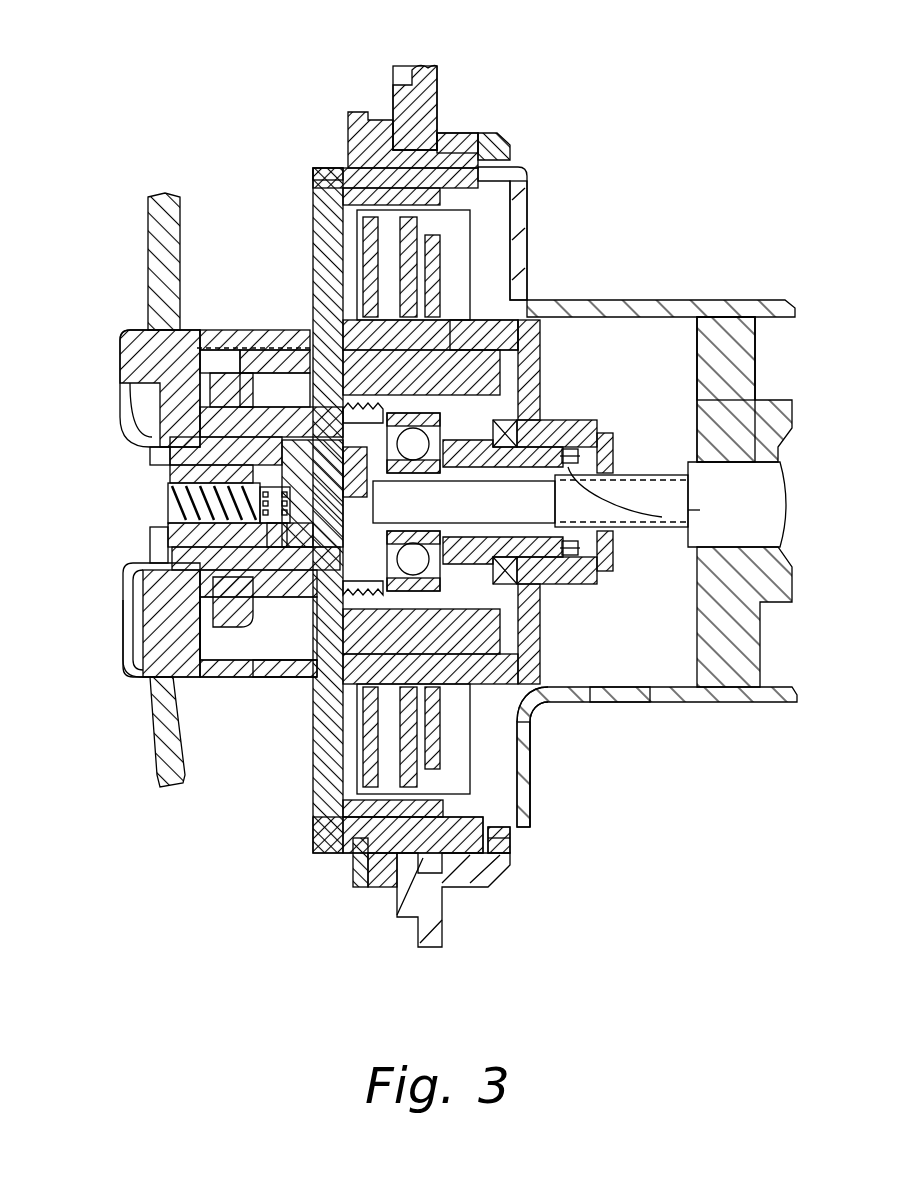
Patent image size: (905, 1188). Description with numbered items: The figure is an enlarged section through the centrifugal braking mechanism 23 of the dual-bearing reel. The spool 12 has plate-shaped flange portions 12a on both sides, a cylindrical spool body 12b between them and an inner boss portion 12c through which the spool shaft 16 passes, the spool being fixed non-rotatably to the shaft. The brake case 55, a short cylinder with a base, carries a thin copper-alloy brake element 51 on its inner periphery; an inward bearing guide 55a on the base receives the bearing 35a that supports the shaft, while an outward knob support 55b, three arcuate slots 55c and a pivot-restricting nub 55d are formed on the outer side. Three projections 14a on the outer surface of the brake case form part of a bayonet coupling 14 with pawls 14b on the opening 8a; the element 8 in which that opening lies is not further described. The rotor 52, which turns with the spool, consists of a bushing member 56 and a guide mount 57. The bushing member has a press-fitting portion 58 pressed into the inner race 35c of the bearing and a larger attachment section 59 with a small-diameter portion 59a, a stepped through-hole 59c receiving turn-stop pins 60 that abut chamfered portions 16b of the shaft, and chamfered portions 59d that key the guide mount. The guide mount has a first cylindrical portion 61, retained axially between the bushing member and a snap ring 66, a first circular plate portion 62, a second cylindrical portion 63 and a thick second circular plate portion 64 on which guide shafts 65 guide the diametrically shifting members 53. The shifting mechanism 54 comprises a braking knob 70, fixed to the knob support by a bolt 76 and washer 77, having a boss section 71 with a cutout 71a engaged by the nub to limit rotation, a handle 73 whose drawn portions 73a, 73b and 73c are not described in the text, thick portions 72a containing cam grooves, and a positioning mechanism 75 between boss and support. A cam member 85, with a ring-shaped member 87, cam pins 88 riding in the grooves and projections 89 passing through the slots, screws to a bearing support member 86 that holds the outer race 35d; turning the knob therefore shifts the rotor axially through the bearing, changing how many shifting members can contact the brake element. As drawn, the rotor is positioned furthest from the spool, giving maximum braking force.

The engine crankshaft 8 is at (440, 118).
The opening 8a is at (486, 158).
The spool 12 is at (757, 298).
The flange portions 12a is at (522, 250).
The spool body 12b is at (695, 303).
The boss portion 12c is at (740, 368).
The bayonet coupling 14 is at (449, 137).
The projections 14a is at (456, 125).
The pawls 14b is at (395, 117).
The spool shaft 16 is at (714, 473).
The chamfered portions 16b is at (662, 527).
The centrifugal braking mechanism 23 is at (276, 710).
The bearing 35a is at (450, 580).
The inner race 35c is at (513, 580).
The outer race 35d is at (517, 846).
The brake element 51 is at (516, 198).
The rotor 52 is at (517, 580).
The shifting members 53 is at (365, 835).
The shifting mechanism 54 is at (286, 392).
The brake case 55 is at (317, 168).
The bearing guide 55a is at (492, 362).
The knob support 55b is at (122, 566).
The slots 55c is at (343, 812).
The pivot-restricting nub 55d is at (225, 360).
The bushing member 56 is at (604, 427).
The guide mount 57 is at (632, 303).
The press-fitting portion 58 is at (410, 481).
The attachment section 59 is at (481, 438).
The small-diameter portion 59a is at (578, 420).
The through-hole 59c is at (690, 510).
The chamfered portions 59d is at (514, 437).
The turn-stop pins 60 is at (603, 580).
The first cylindrical portion 61 is at (567, 580).
The first circular plate portion 62 is at (530, 610).
The second cylindrical portion 63 is at (513, 850).
The second circular plate portion 64 is at (443, 680).
The guide shafts 65 is at (417, 820).
The snap ring 66 is at (570, 582).
The braking knob 70 is at (116, 684).
The boss section 71 is at (213, 568).
The cutout 71a is at (163, 393).
The thick portions 72a is at (292, 330).
The handle 73 is at (140, 686).
The rotor cap 73a is at (132, 412).
The rotor cap corner 73b is at (147, 662).
The rotor lower cap 73c is at (123, 651).
The positioning mechanism 75 is at (168, 470).
The bolt 76 is at (255, 510).
The washer 77 is at (128, 580).
The cam member 85 is at (264, 638).
The bearing support member 86 is at (314, 176).
The ring-shaped member 87 is at (233, 655).
The cam pins 88 is at (200, 323).
The projections 89 is at (301, 595).